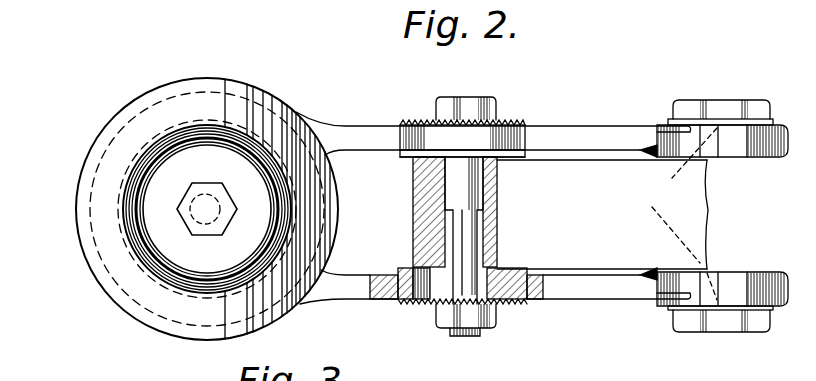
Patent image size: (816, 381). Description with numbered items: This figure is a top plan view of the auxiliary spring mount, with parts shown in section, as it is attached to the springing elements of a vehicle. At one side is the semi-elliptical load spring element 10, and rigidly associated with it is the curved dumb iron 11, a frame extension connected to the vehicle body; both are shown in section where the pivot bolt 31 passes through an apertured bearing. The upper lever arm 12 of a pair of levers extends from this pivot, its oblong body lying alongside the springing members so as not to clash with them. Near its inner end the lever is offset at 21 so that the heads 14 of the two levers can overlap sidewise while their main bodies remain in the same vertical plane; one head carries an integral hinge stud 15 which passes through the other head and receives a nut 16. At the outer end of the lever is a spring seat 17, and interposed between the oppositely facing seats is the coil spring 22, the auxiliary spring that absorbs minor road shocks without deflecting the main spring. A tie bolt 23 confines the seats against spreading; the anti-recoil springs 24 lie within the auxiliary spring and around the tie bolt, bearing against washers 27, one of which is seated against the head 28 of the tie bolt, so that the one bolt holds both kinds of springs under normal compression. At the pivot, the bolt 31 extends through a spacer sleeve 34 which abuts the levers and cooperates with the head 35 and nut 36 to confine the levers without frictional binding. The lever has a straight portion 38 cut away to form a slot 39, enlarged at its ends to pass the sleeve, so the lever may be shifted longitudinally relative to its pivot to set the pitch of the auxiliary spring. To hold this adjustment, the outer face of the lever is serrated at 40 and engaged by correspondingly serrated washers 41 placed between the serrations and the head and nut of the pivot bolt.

The semi-elliptical load spring element 10 is at (612, 258).
The dumb iron 11 is at (418, 196).
The upper lever arm 12 is at (562, 126).
The heads 14 is at (662, 124).
The hinge stud 15 is at (607, 214).
The nut 16 is at (757, 99).
The spring seats 17 is at (78, 195).
The offset 21 is at (648, 146).
The coil spring 22 is at (102, 158).
The tie bolt 23 is at (207, 216).
The anti-recoil springs 24 is at (146, 264).
The washers 27 is at (150, 228).
The head 28 is at (190, 194).
The pivot bolt 31 is at (470, 276).
The spacer sleeve 34 is at (440, 232).
The head 35 is at (494, 99).
The nut 36 is at (492, 326).
The straight portions 38 is at (400, 154).
The slots 39 is at (497, 262).
The serrated faces 40 is at (410, 122).
The washers 41 is at (428, 118).